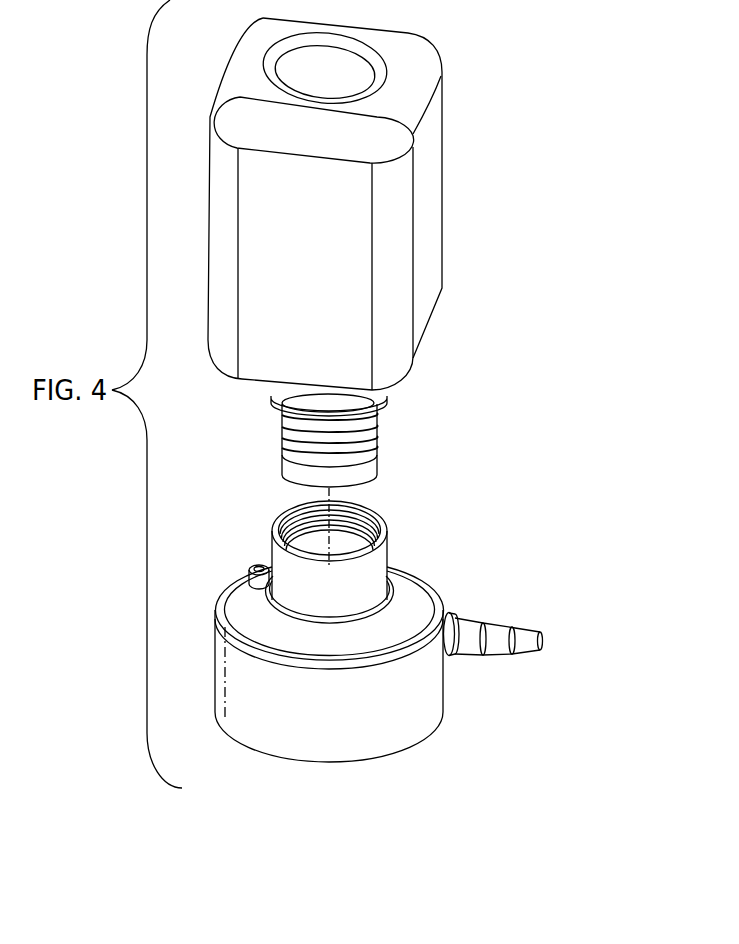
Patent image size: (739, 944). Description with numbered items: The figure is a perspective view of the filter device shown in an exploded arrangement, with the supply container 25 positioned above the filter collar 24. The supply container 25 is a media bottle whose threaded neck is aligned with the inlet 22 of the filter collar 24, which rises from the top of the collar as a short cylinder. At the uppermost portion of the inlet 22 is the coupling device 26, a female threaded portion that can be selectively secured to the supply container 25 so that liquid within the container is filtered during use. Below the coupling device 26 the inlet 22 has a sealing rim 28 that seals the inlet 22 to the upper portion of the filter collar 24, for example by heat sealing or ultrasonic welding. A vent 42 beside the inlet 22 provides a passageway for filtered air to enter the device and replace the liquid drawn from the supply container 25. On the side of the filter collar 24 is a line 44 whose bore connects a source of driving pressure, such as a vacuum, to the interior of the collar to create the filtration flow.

The inlet 22 is at (373, 567).
The filter collar 24 is at (407, 722).
The supply container 25 is at (430, 233).
The coupling device 26 is at (356, 524).
The sealing rim 28 is at (413, 603).
The vent 42 is at (257, 568).
The line 44 is at (543, 641).